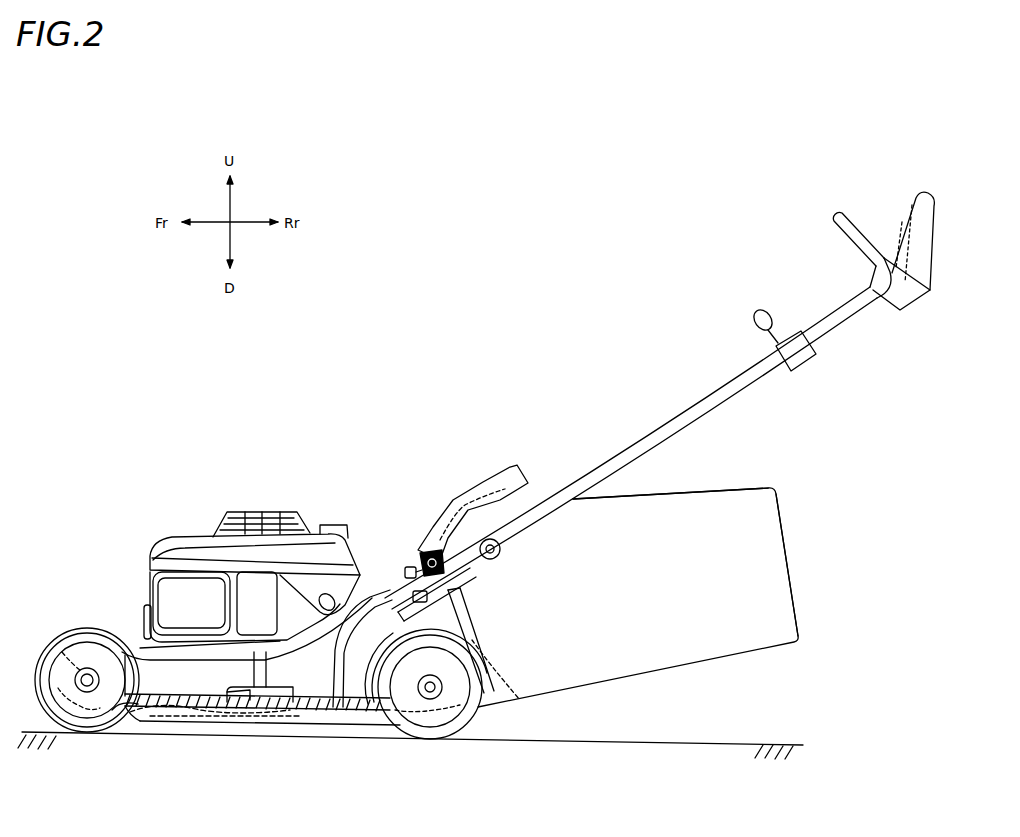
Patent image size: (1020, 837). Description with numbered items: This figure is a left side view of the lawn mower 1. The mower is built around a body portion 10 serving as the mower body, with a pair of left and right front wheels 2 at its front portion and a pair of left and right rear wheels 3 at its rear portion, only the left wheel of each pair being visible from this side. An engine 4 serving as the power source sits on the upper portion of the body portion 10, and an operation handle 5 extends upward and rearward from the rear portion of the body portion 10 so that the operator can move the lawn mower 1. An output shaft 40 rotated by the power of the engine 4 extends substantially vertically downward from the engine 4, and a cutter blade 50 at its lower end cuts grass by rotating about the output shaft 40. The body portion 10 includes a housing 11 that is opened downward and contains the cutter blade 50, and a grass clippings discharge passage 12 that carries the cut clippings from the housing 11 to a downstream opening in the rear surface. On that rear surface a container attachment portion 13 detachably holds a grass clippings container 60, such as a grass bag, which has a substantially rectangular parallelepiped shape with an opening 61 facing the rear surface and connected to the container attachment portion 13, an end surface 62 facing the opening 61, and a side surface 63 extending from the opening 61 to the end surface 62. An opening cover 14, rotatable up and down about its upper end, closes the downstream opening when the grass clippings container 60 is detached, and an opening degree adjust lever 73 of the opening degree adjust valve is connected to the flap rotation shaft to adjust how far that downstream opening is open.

The lawn mower 1 is at (515, 298).
The front wheels 2 is at (92, 732).
The rear wheels 3 is at (452, 720).
The engine 4 is at (198, 540).
The operation handle 5 is at (697, 402).
The body portion 10 is at (146, 657).
The housing 11 is at (310, 728).
The grass clippings discharge passage 12 is at (448, 596).
The container attachment portion 13 is at (440, 623).
The opening cover 14 is at (488, 478).
The output shaft 40 is at (255, 702).
The cutter blade 50 is at (152, 722).
The grass clippings container 60 is at (767, 530).
The opening 61 is at (520, 700).
The end surface 62 is at (803, 590).
The side surface 63 is at (674, 545).
The opening degree adjust lever 73 is at (407, 566).